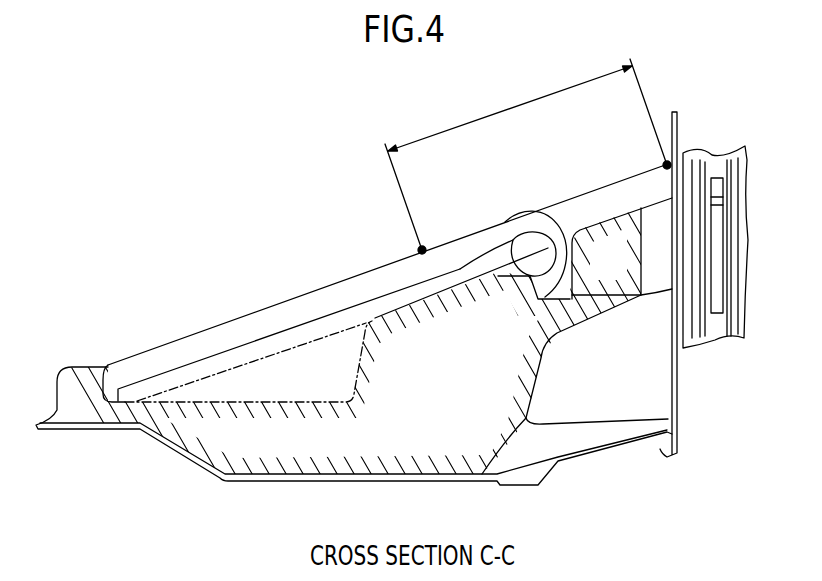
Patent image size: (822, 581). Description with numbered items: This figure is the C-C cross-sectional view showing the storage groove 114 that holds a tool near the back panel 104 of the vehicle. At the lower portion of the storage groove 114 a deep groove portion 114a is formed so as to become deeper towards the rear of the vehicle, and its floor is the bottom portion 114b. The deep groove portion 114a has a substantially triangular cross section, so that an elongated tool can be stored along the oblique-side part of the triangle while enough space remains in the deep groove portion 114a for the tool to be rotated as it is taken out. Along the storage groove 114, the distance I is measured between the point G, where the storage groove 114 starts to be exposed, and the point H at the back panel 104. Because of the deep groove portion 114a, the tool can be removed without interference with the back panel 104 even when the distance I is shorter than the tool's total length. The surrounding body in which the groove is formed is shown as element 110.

The back panel 104 is at (680, 125).
The housing 110 is at (249, 442).
The storage groove 114 is at (538, 266).
The deep groove portion 114a is at (232, 384).
The bottom portion 114b is at (170, 398).
The point G is at (419, 248).
The point H is at (665, 165).
The distance I is at (526, 154).